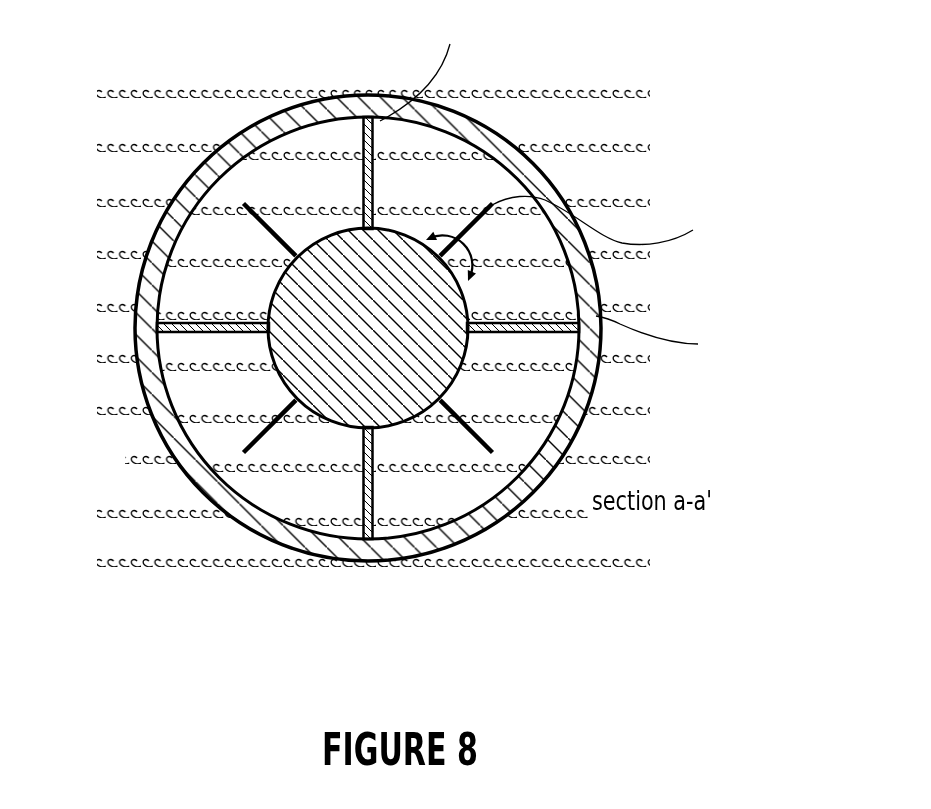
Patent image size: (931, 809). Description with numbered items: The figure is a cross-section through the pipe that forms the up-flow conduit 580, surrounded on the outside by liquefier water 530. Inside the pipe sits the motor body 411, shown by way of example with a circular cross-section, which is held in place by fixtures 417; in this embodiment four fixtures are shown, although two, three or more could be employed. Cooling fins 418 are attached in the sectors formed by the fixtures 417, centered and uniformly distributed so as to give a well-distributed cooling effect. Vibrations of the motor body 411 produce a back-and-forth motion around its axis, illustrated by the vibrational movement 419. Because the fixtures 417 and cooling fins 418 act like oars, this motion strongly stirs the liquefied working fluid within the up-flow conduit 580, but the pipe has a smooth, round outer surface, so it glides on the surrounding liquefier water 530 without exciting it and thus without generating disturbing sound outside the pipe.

The motor body 411 is at (358, 232).
The fixtures 417 is at (160, 332).
The cooling fins 418 is at (247, 224).
The vibrational movement 419 is at (447, 237).
The liquefier water 530 is at (60, 553).
The up-flow conduit 580 is at (253, 527).